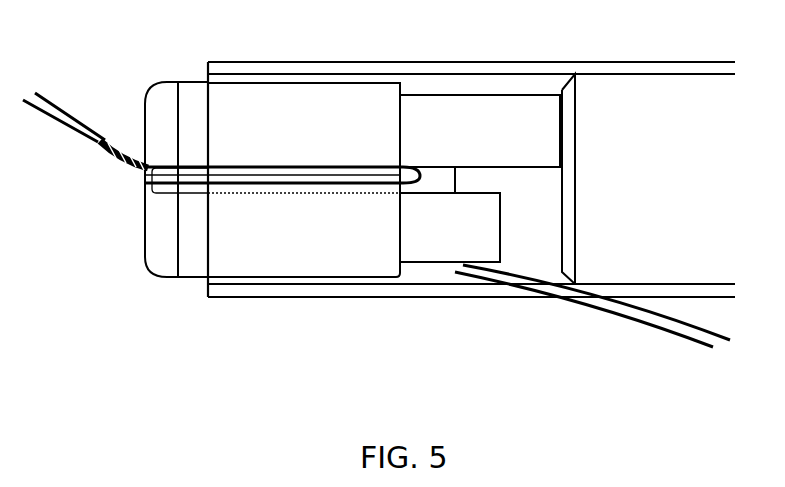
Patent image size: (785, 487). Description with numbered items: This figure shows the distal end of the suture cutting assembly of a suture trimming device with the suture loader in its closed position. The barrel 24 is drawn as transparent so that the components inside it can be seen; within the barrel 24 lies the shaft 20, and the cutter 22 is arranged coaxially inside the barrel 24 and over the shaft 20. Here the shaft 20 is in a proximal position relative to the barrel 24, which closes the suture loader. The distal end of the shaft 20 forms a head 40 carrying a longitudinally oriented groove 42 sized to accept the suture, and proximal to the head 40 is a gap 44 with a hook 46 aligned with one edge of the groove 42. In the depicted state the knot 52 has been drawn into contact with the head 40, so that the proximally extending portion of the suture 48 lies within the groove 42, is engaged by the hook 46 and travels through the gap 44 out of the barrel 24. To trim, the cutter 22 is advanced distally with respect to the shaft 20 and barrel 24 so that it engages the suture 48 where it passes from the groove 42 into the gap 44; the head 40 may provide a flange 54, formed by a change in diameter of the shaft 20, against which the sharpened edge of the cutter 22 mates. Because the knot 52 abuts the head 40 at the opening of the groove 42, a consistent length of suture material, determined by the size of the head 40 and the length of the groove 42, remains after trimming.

The shaft 20 is at (493, 135).
The cutter 22 is at (680, 183).
The barrel 24 is at (477, 62).
The head 40 is at (155, 270).
The groove 42 is at (303, 193).
The gap 44 is at (472, 185).
The hook 46 is at (502, 232).
The suture 48 is at (573, 305).
The knot 52 is at (102, 155).
The flange 54 is at (408, 270).